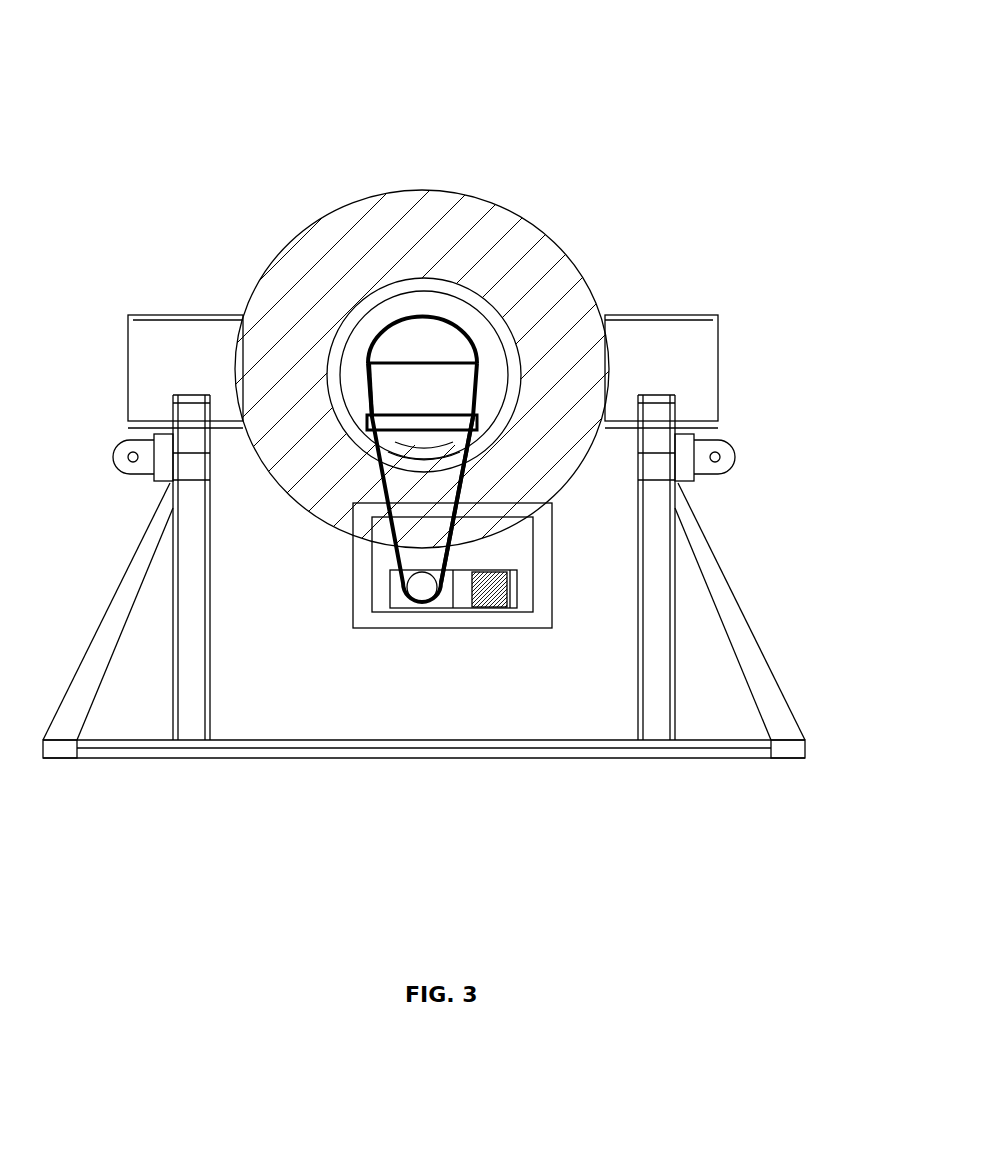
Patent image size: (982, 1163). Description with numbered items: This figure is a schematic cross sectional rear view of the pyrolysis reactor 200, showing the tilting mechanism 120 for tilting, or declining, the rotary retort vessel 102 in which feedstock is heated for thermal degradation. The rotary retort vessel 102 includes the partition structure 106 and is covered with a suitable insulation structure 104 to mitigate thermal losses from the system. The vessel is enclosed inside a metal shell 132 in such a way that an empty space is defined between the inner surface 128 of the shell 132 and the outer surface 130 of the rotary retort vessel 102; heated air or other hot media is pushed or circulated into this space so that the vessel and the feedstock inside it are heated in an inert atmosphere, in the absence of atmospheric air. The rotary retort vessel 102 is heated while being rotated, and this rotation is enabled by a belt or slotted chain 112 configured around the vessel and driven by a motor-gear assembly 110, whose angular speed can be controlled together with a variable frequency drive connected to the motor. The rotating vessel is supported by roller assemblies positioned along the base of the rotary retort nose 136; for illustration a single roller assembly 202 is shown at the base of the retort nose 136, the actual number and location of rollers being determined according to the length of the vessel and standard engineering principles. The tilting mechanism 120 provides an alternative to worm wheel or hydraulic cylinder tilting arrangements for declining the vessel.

The rotary retort vessel 102 is at (463, 313).
The insulation structure 104 is at (413, 210).
The partition structure 106 is at (467, 353).
The motor-gear assembly 110 is at (487, 607).
The belt or slotted chain 112 is at (460, 492).
The tilting mechanism 120 is at (131, 303).
The inner surface of the shell 128 is at (392, 277).
The outer surface of the rotary retort vessel 130 is at (433, 283).
The shell 132 is at (350, 307).
The rotary retort nose 136 is at (351, 369).
The pyrolysis reactor 200 is at (704, 863).
The roller assembly 202 is at (475, 428).